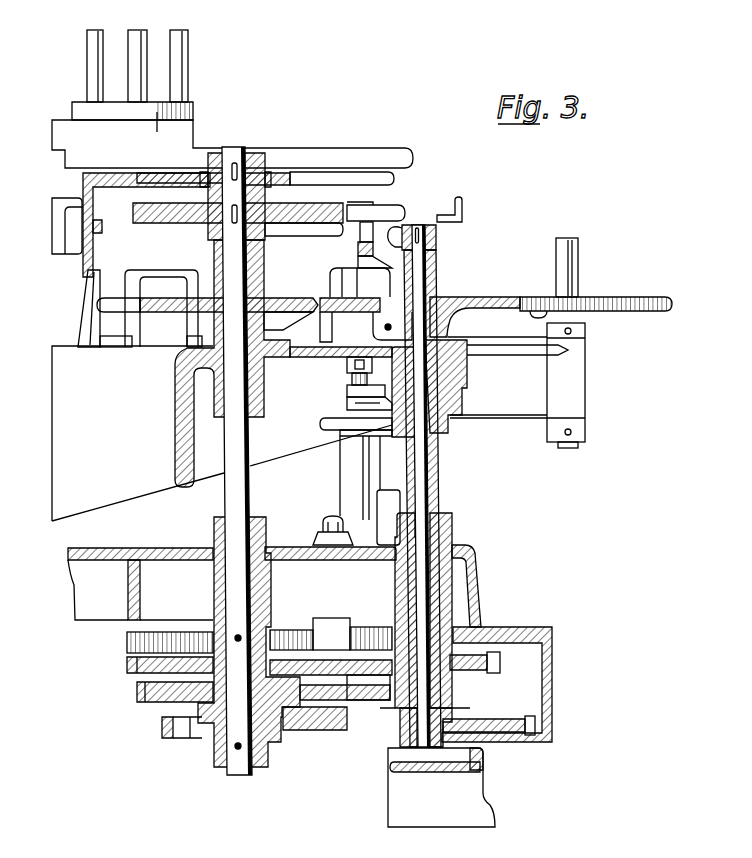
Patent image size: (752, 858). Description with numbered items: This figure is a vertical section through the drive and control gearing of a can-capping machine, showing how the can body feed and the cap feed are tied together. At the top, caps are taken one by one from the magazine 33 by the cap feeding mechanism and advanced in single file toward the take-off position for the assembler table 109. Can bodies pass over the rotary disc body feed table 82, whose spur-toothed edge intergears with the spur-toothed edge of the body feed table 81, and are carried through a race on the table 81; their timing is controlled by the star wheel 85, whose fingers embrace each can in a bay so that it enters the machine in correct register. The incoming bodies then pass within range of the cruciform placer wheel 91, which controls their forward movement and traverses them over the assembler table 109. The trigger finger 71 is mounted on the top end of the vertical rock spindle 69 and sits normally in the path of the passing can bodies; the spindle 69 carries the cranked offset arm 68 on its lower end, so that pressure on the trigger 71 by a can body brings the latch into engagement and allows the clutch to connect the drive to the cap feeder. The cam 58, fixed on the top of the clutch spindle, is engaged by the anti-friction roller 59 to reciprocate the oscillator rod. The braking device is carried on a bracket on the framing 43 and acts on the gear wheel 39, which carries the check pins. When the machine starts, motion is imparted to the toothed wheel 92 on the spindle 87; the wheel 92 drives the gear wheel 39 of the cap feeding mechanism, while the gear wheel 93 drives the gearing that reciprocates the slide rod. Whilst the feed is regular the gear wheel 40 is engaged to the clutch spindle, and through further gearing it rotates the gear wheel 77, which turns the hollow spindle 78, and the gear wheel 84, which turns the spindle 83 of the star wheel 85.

The magazine 33 is at (132, 81).
The cruciform placer wheel 91 is at (336, 175).
The assembler table 109 is at (297, 298).
The trigger finger 71 is at (397, 217).
The star wheel 85 is at (436, 227).
The body feed table 81 is at (473, 302).
The rotary disc body feed table 82 is at (537, 305).
The spindle 87 is at (236, 497).
The hollow spindle 78 is at (436, 474).
The spindle of the star wheel 83 is at (432, 506).
The vertical rock spindle 69 is at (350, 375).
The anti-friction roller 59 is at (380, 392).
The cranked offset arm 68 is at (358, 404).
The cam 58 is at (340, 427).
The framing 43 is at (352, 484).
The gear wheel 39 is at (190, 632).
The gear wheel 40 is at (358, 626).
The gear wheel 93 is at (127, 667).
The toothed wheel 92 is at (137, 694).
The gear wheel 77 is at (500, 663).
The gear wheel 84 is at (509, 728).